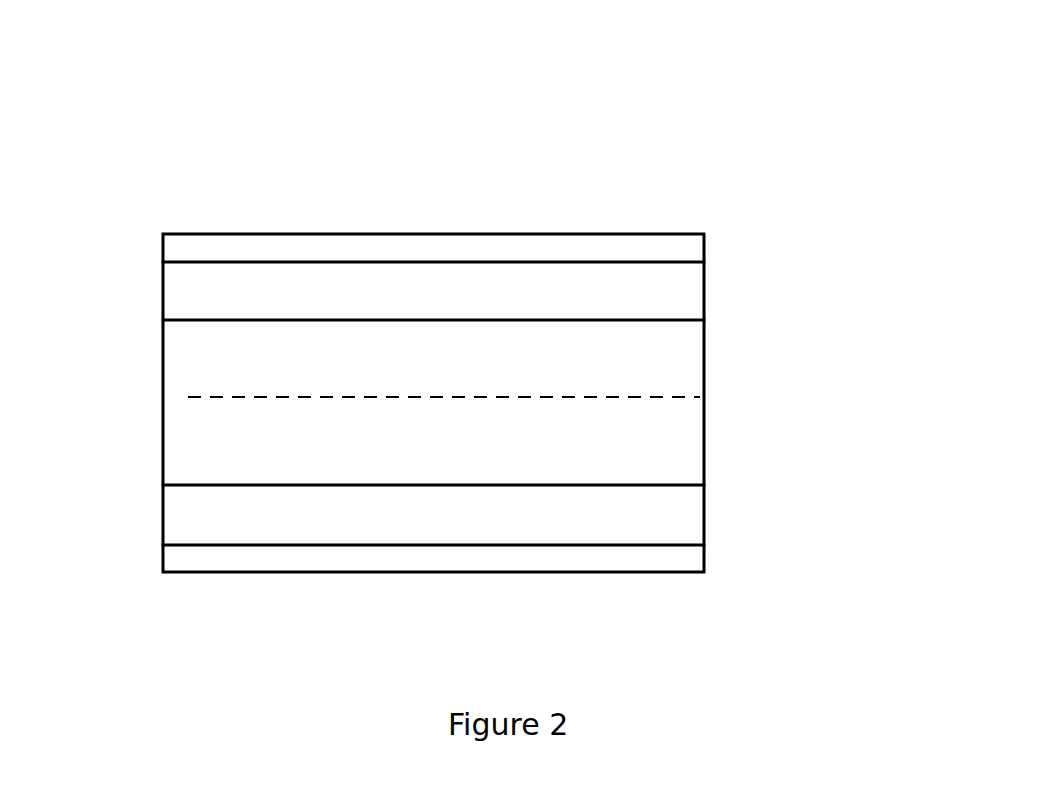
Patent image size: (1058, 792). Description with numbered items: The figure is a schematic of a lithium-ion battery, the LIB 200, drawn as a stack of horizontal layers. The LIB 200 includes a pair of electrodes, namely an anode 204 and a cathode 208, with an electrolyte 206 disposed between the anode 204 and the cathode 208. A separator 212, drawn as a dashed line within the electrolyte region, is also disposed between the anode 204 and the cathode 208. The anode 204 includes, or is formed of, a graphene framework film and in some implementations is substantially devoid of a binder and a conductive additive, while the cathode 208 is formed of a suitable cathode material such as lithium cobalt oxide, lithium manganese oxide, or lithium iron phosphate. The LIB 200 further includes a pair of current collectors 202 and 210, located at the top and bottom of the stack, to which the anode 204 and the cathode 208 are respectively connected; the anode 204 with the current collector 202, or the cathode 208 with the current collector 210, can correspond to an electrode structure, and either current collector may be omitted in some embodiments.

The LIB 200 is at (684, 121).
The current collector 202 is at (705, 236).
The anode 204 is at (700, 285).
The electrolyte 206 is at (680, 419).
The cathode 208 is at (690, 520).
The current collector 210 is at (702, 571).
The separator 212 is at (233, 387).